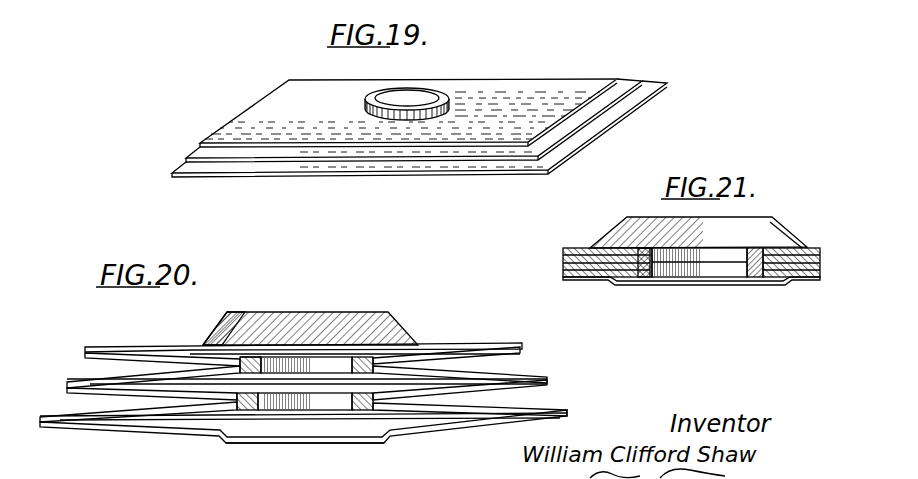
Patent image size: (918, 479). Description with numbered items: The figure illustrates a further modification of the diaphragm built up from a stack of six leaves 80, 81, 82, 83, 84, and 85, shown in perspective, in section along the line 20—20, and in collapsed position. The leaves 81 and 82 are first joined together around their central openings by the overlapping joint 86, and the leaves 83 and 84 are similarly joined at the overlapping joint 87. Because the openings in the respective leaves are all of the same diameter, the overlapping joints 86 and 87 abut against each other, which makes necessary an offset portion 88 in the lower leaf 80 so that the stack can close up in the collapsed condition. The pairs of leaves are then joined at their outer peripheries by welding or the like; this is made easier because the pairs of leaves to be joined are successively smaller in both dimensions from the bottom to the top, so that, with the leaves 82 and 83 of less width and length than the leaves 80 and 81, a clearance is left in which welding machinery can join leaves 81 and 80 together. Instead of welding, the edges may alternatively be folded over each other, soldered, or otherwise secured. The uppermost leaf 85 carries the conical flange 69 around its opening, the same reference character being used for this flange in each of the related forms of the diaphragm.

In FIG. 19, the section line 20 is at (502, 67).
In FIG. 19, the conical flange 69 is at (451, 106).
In FIG. 20, the conical flange 69 is at (400, 323).
In FIG. 21, the conical flange 69 is at (622, 229).
In FIG. 20, the lower leaf 80 is at (407, 432).
In FIG. 20, the leaf 81 is at (500, 402).
In FIG. 20, the leaf 82 is at (530, 387).
In FIG. 20, the leaf 83 is at (517, 375).
In FIG. 20, the leaf 84 is at (513, 355).
In FIG. 20, the leaf 85 is at (443, 342).
In FIG. 21, the leaf 85 is at (691, 262).
In FIG. 20, the overlapping joint 86 is at (250, 408).
In FIG. 21, the overlapping joint 86 is at (643, 272).
In FIG. 20, the overlapping joint 87 is at (257, 362).
In FIG. 21, the overlapping joint 87 is at (640, 252).
In FIG. 20, the offset portion 88 is at (309, 442).
In FIG. 21, the offset portion 88 is at (702, 286).